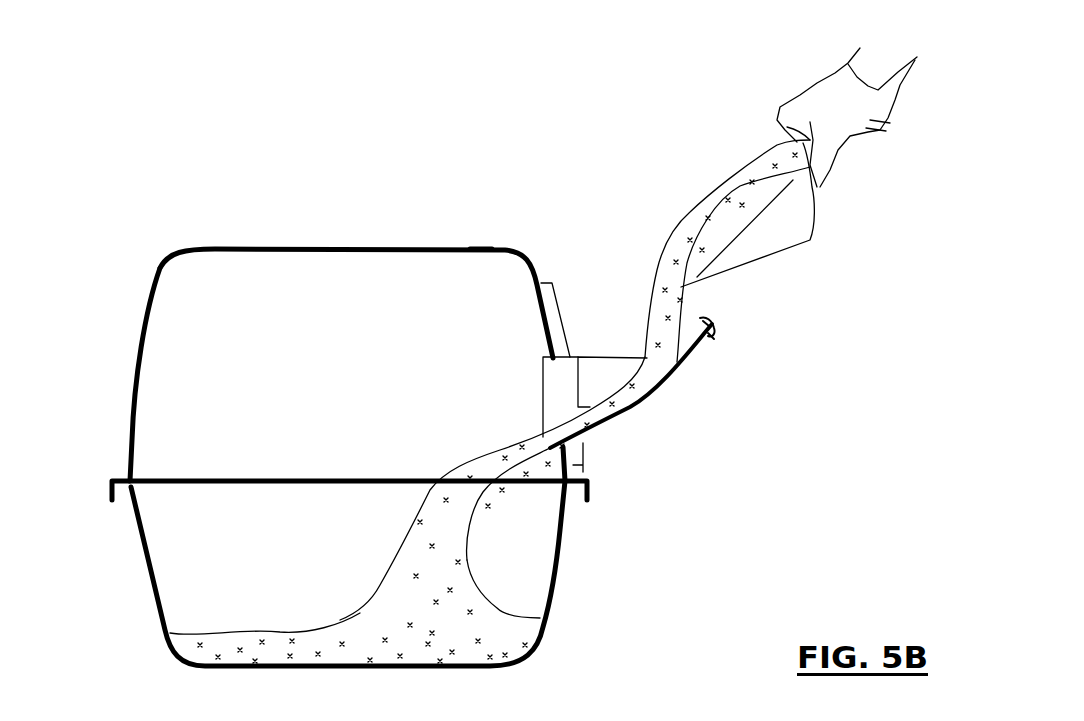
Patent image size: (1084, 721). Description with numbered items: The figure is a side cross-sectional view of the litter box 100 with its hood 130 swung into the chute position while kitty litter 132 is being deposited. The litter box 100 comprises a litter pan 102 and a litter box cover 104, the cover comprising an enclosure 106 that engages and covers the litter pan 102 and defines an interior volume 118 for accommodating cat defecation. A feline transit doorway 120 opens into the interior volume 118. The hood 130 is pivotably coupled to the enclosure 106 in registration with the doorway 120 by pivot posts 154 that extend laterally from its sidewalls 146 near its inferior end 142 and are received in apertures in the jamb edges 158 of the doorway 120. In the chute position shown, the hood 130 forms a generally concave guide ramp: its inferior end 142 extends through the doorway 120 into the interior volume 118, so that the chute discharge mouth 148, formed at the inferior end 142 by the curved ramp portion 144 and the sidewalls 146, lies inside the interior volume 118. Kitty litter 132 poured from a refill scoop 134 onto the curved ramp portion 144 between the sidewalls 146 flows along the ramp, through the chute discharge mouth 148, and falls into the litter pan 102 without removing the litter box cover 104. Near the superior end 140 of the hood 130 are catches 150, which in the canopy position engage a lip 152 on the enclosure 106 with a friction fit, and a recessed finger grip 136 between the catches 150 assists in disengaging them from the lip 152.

The litter box 100 is at (381, 427).
The litter pan 102 is at (152, 632).
The litter box cover 104 is at (110, 436).
The enclosure 106 is at (150, 290).
The interior volume 118 is at (368, 371).
The feline transit doorway 120 is at (600, 456).
The hood 130 is at (600, 380).
The kitty litter 132 is at (655, 312).
The refill scoop 134 is at (787, 230).
The recessed finger grip 136 is at (712, 337).
The superior end 140 is at (714, 328).
The inferior end 142 is at (543, 377).
The curved ramp portion 144 is at (652, 402).
The sidewalls 146 is at (623, 373).
The chute discharge mouth 148 is at (529, 426).
The catches 150 is at (703, 322).
The lip 152 is at (487, 249).
The pivot posts 154 is at (548, 362).
The jamb edges 158 is at (578, 466).